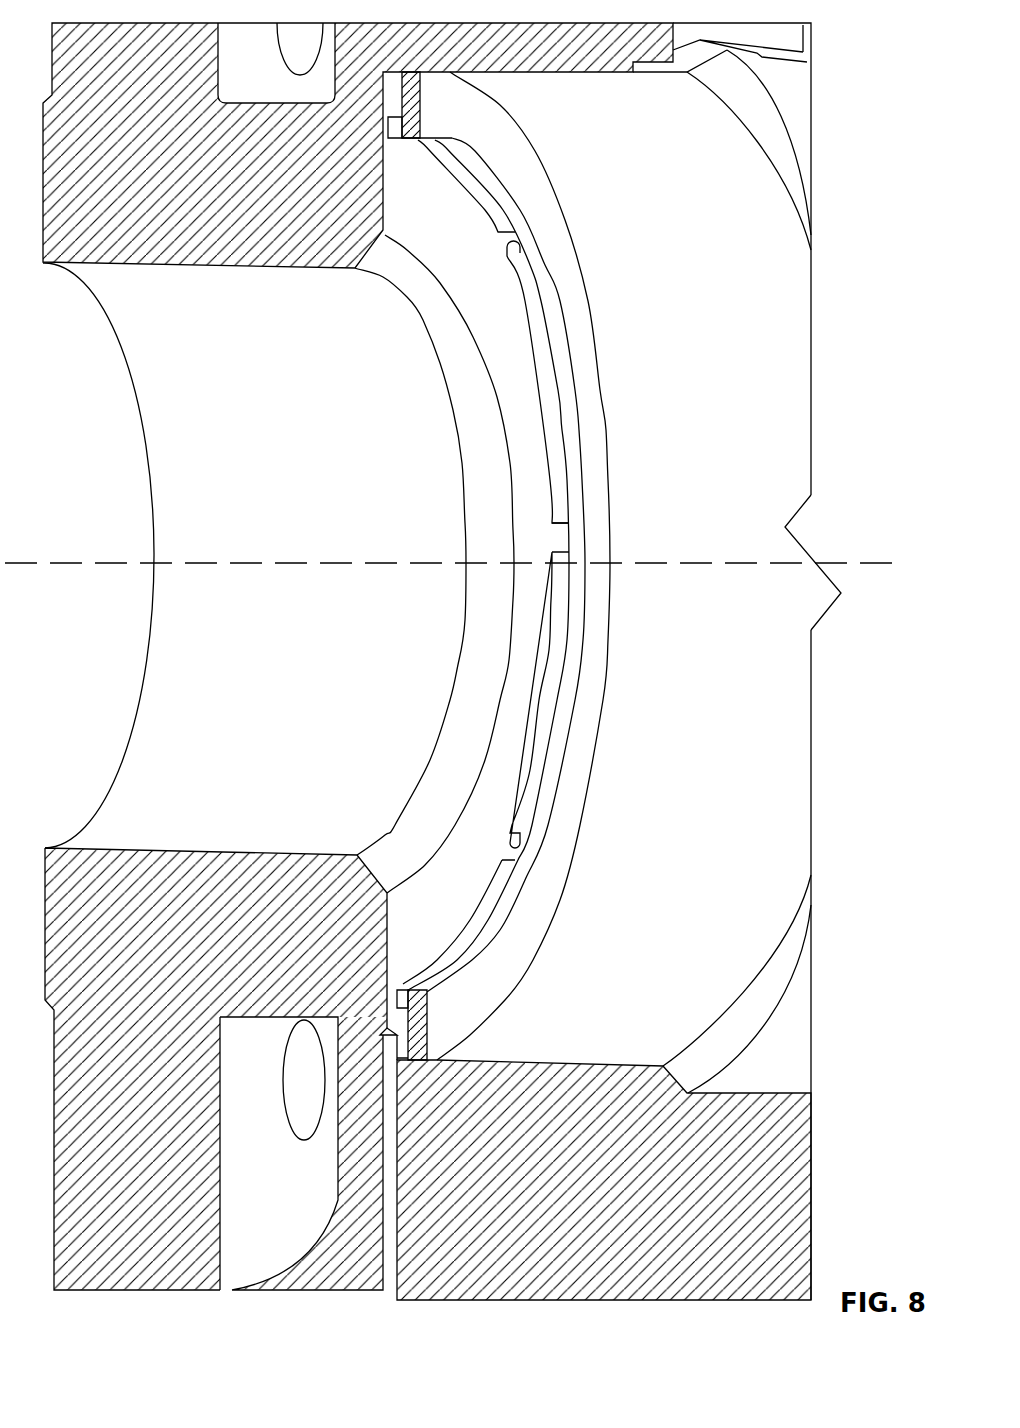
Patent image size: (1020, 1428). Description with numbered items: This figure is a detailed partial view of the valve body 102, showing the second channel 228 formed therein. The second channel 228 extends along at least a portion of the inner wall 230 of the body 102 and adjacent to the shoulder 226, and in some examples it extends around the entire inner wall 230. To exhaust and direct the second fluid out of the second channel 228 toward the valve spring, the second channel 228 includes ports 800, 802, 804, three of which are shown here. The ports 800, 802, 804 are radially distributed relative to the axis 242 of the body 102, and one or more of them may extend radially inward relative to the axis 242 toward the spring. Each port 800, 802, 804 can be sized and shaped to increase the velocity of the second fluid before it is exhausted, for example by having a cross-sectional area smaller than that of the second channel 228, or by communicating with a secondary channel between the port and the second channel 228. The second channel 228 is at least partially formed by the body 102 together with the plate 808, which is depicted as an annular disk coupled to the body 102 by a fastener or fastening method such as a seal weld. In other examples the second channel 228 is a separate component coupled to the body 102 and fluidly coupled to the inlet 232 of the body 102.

The valve body 102 is at (812, 1162).
The shoulder 226 is at (388, 232).
The second channel 228 is at (400, 1018).
The inner wall 230 is at (735, 509).
The inlet 232 is at (391, 1304).
The axis 242 is at (125, 572).
The port 800 is at (498, 246).
The port 802 is at (538, 542).
The port 804 is at (490, 842).
The plate 808 is at (506, 982).